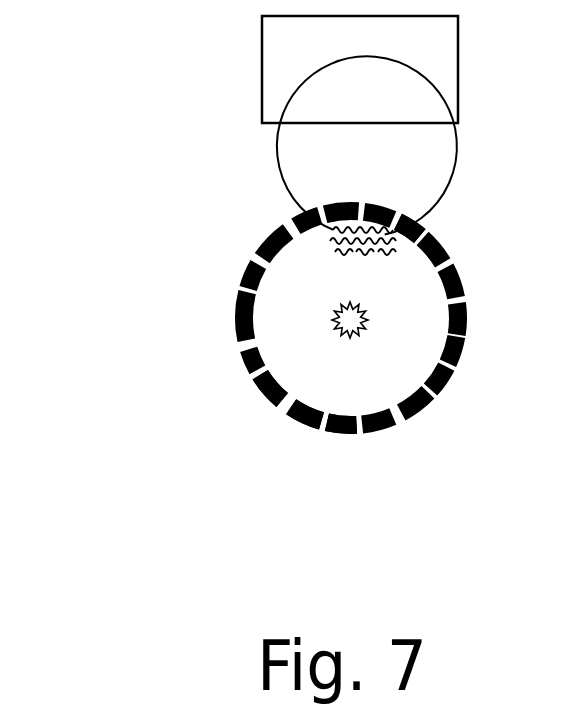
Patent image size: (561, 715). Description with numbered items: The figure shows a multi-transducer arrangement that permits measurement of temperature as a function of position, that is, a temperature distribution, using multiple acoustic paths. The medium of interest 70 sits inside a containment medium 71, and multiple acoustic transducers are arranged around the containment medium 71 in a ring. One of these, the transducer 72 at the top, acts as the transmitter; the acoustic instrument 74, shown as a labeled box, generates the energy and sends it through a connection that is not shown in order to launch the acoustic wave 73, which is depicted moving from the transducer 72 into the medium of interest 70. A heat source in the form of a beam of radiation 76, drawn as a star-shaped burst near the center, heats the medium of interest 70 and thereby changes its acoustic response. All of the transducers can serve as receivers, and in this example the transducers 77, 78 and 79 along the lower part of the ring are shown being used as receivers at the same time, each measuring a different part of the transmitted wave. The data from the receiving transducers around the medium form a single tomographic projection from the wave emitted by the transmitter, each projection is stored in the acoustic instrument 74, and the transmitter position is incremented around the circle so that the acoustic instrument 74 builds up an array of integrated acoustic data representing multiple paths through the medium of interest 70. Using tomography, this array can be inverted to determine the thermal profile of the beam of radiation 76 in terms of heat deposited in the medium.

The medium of interest 70 is at (298, 283).
The containment medium 71 is at (250, 259).
The transducer 72 is at (332, 205).
The acoustic wave 73 is at (423, 228).
The acoustic instrument 74 is at (262, 52).
The beam of radiation 76 is at (335, 336).
The transducer 77 is at (273, 402).
The transducer 78 is at (307, 425).
The transducer 79 is at (338, 432).